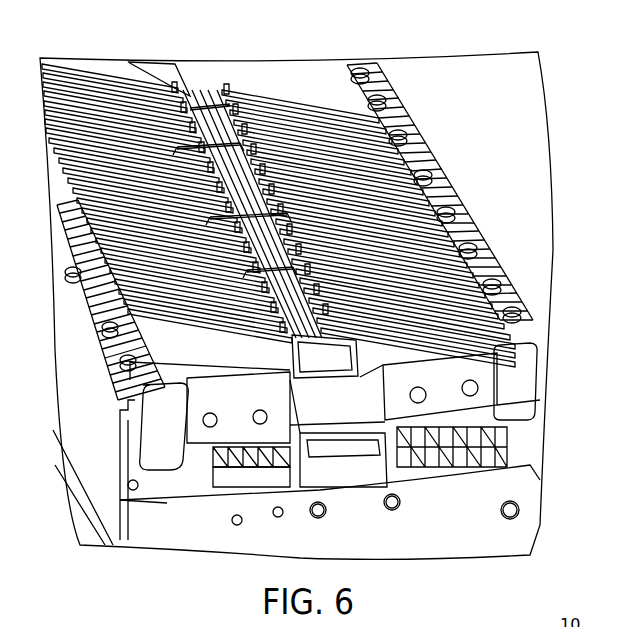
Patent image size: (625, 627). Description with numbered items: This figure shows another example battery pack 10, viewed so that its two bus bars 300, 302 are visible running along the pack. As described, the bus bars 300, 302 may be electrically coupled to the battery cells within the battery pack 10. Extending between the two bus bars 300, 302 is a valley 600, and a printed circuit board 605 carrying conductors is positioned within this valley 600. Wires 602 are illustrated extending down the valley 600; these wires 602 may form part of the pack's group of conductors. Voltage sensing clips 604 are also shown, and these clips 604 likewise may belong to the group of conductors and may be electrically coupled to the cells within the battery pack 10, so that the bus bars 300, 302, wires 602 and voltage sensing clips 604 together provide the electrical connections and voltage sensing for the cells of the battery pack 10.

The battery pack 10 is at (565, 89).
The bus bar 300 is at (200, 318).
The bus bar 302 is at (420, 150).
The valley 600 is at (186, 46).
The wires 602 is at (190, 127).
The voltage sensing clips 604 is at (93, 402).
The printed circuit board 605 is at (157, 63).